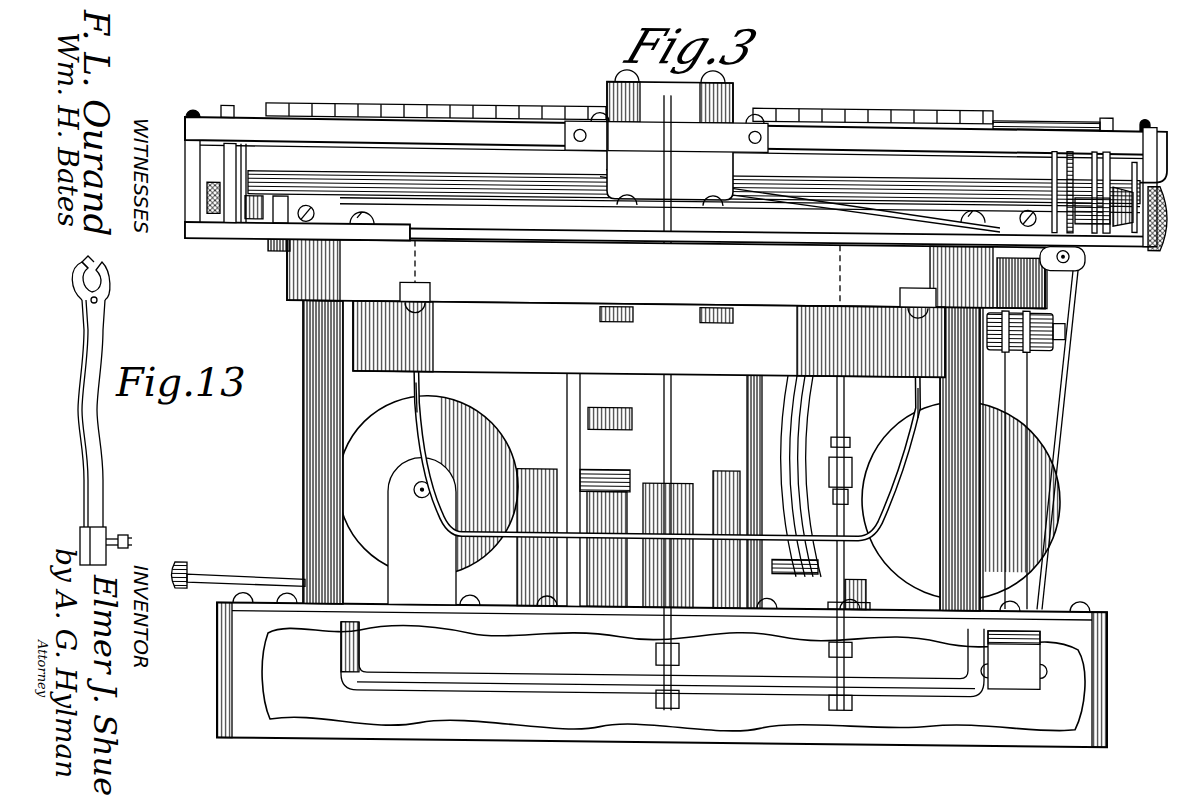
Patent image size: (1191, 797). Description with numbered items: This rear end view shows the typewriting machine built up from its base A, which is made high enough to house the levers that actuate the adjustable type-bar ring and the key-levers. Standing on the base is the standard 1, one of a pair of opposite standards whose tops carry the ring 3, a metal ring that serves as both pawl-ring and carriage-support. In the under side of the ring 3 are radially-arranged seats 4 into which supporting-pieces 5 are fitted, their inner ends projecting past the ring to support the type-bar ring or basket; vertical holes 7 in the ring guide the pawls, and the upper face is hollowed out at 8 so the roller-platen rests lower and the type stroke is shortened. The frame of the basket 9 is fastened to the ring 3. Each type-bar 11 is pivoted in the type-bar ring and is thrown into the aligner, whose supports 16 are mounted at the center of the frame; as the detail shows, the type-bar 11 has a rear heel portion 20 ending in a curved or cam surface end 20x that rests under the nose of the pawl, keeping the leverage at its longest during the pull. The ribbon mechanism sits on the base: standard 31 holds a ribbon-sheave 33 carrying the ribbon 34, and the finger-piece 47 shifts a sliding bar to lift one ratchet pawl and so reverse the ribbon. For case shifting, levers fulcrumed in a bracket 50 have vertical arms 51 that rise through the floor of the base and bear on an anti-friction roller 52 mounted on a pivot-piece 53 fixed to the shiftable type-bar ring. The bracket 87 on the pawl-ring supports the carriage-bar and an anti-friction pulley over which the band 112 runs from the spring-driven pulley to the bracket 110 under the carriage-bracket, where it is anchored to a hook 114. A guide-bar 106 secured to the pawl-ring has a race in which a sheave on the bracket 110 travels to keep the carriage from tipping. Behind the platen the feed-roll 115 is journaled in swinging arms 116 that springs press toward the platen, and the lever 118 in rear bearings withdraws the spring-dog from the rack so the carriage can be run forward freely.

In FIG. 3, the standard 1 is at (1168, 162).
In FIG. 3, the ring 3 is at (667, 273).
In FIG. 3, the radially-arranged seats 4 is at (400, 290).
In FIG. 3, the supporting-pieces 5 is at (430, 290).
In FIG. 3, the vertical holes 7 is at (318, 435).
In FIG. 3, the hollowed-out portion 8 is at (1140, 212).
In FIG. 3, the basket frame 9 is at (422, 338).
In FIG. 13, the type-bar 11 is at (88, 437).
In FIG. 3, the type-bar 11 is at (800, 452).
In FIG. 3, the supports 16 is at (639, 491).
In FIG. 13, the rear heel portion 20 is at (68, 282).
In FIG. 13, the curved or cam surface end 20x is at (74, 255).
In FIG. 3, the standard 31 is at (422, 531).
In FIG. 3, the ribbon-sheaves 33 is at (700, 498).
In FIG. 3, the ribbon 34 is at (435, 398).
In FIG. 3, the finger-piece 47 is at (239, 573).
In FIG. 3, the bracket 50 is at (1032, 662).
In FIG. 3, the vertical arms 51 is at (1010, 378).
In FIG. 3, the anti-friction roller 52 is at (1045, 318).
In FIG. 3, the pivot-piece 53 is at (1065, 322).
In FIG. 3, the bracket 87 is at (186, 172).
In FIG. 3, the guide-bar 106 is at (323, 207).
In FIG. 3, the bracket 110 is at (679, 134).
In FIG. 3, the band 112 is at (840, 208).
In FIG. 3, the hook 114 is at (622, 186).
In FIG. 3, the feed-roll 115 is at (337, 184).
In FIG. 3, the swinging arms 116 is at (236, 164).
In FIG. 3, the lever 118 is at (568, 157).
In FIG. 3, the base A is at (662, 669).